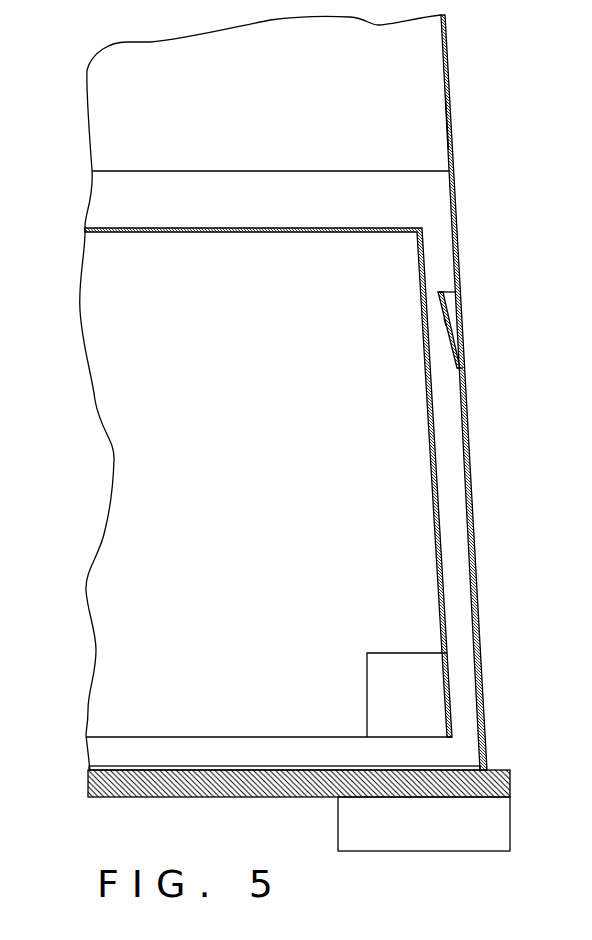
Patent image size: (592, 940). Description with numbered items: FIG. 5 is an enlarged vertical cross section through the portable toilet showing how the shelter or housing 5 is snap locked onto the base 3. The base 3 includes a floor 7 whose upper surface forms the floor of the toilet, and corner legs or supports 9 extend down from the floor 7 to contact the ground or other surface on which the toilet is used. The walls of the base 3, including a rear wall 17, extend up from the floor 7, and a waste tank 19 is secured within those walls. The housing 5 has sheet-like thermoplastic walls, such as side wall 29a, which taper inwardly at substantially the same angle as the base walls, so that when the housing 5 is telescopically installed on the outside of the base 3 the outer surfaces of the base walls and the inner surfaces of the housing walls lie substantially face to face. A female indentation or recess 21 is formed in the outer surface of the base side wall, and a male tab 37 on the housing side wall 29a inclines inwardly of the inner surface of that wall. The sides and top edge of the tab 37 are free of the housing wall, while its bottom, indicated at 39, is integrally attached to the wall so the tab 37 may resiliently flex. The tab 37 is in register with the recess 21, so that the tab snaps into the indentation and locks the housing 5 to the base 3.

The base 3 is at (216, 804).
The shelter or housing 5 is at (452, 65).
The floor 7 is at (170, 768).
The corner legs or supports 9 is at (510, 833).
The rear wall 17 is at (203, 181).
The waste tank 19 is at (120, 227).
The female indentation or recess 21 is at (446, 321).
The side wall 29a is at (450, 127).
The male tab 37 is at (460, 320).
The bottom of tab 39 is at (463, 367).